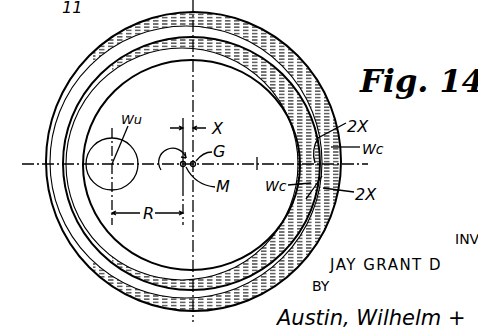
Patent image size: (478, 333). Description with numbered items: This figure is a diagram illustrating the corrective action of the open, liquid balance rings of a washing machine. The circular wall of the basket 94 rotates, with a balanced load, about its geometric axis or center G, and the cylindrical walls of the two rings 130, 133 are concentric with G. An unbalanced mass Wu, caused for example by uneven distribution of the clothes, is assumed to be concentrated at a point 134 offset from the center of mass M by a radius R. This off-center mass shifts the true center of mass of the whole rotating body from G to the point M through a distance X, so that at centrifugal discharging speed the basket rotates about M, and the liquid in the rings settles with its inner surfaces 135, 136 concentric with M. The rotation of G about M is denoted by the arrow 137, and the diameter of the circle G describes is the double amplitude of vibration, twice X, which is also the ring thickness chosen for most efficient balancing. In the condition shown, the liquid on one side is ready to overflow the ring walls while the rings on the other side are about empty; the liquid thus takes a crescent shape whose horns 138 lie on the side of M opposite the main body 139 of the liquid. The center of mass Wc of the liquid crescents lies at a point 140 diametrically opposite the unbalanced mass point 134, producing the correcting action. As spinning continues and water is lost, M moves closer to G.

The circular wall of the basket 94 is at (88, 197).
The cylindrical wall of ring 130 is at (66, 136).
The cylindrical wall of ring 133 is at (53, 116).
The point of unbalanced mass 134 is at (126, 131).
The inner surface of liquid 135 is at (161, 50).
The inner surface of liquid 136 is at (133, 40).
The arrow 137 is at (164, 167).
The horns of the liquid crescent 138 is at (117, 62).
The main body of the liquid 139 is at (309, 200).
The center of mass of the liquid crescents 140 is at (257, 160).